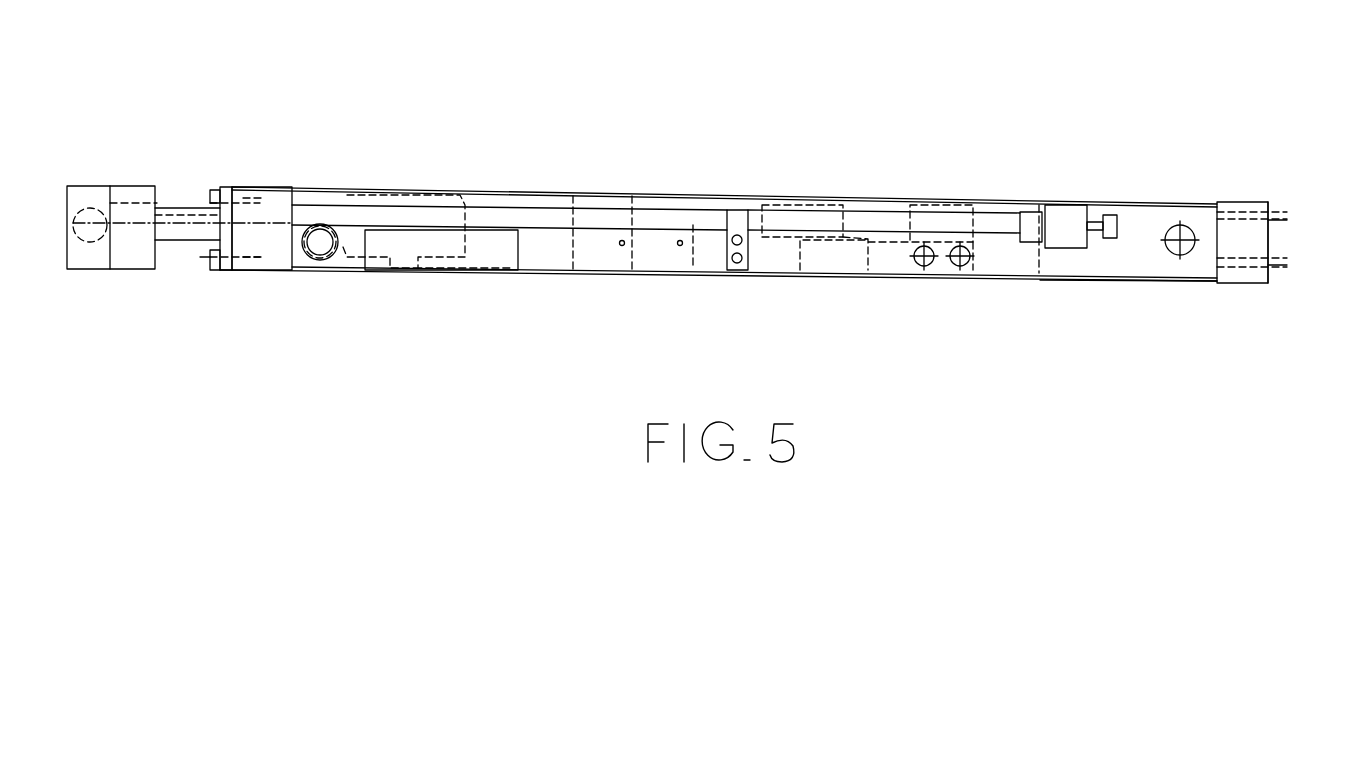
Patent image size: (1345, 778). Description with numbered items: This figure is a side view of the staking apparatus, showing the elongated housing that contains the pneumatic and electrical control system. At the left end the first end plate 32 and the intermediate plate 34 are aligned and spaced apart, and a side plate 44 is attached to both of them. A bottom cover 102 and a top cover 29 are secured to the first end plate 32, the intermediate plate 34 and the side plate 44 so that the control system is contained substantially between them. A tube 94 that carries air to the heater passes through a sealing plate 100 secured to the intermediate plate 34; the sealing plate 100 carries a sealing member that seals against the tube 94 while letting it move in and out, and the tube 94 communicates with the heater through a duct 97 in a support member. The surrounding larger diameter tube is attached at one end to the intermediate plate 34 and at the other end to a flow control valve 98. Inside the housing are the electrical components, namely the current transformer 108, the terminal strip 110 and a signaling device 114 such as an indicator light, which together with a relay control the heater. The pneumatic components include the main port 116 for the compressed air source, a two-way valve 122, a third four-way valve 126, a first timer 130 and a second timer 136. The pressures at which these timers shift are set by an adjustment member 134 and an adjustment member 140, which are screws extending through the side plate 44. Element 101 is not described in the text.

The tube 94 is at (197, 207).
The lock nut 101 is at (223, 203).
The sealing plate 100 is at (226, 220).
The intermediate plate 34 is at (267, 188).
The signaling device 114 is at (338, 230).
The terminal strip 110 is at (505, 230).
The first timer 130 is at (572, 242).
The adjustment member 140 is at (623, 241).
The adjustment member 134 is at (681, 241).
The second timer 136 is at (693, 225).
The current transformer 108 is at (843, 205).
The third four-way valve 126 is at (857, 233).
The two-way valve 122 is at (973, 207).
The duct 97 is at (990, 215).
The flow control valve 98 is at (1087, 207).
The side plate 44 is at (1153, 217).
The top cover 29 is at (1203, 200).
The first end plate 32 is at (1268, 202).
The bottom cover 102 is at (1082, 282).
The main port 116 is at (1185, 255).